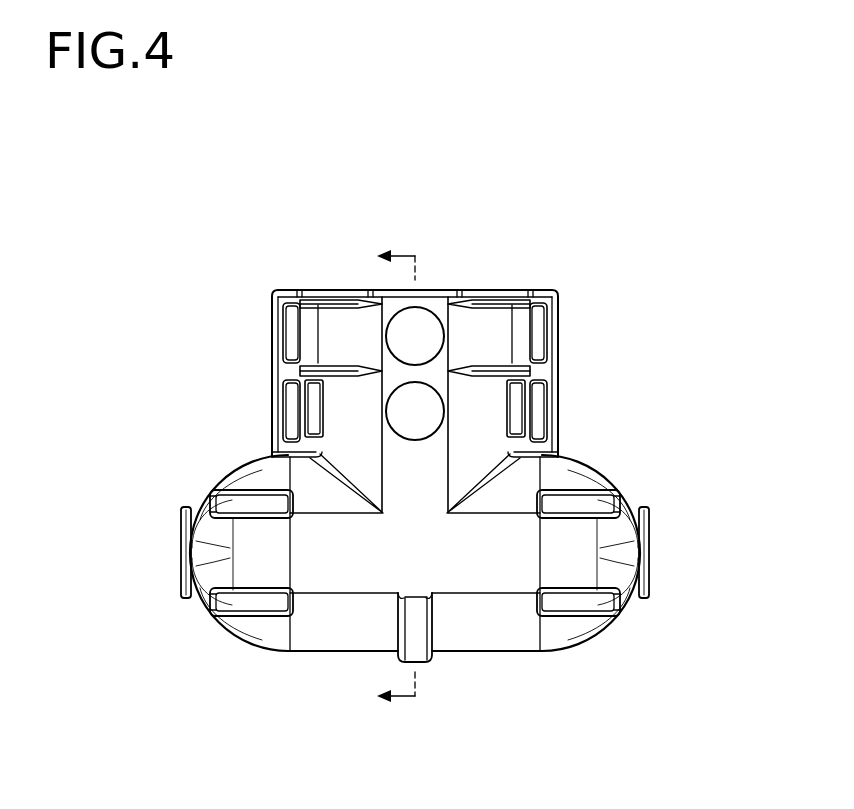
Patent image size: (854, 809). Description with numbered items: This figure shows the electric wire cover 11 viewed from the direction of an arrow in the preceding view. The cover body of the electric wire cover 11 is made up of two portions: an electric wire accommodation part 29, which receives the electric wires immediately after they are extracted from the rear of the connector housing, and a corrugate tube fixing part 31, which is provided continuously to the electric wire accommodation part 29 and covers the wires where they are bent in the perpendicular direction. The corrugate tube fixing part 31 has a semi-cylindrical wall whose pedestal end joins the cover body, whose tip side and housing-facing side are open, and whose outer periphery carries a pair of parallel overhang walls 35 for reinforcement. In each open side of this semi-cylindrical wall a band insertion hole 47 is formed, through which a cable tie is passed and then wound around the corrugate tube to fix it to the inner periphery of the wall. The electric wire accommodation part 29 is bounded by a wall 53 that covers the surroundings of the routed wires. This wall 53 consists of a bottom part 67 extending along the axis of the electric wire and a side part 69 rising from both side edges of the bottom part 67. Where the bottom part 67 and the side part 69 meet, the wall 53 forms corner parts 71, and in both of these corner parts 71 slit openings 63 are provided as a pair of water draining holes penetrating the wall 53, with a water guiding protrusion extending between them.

The electric wire cover 11 is at (238, 262).
The electric wire accommodation part 29 is at (660, 490).
The corrugate tube fixing part 31 is at (560, 274).
The overhang walls 35 is at (333, 290).
The band insertion hole 47 is at (310, 405).
The wall 53 is at (486, 660).
The slit openings 63 is at (255, 507).
The bottom part 67 is at (276, 562).
The side part 69 is at (184, 526).
The corner parts 71 is at (196, 566).